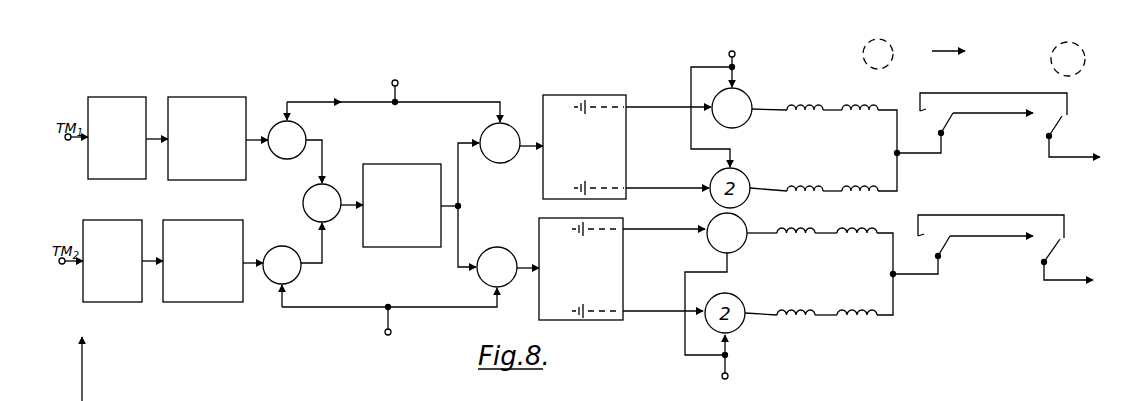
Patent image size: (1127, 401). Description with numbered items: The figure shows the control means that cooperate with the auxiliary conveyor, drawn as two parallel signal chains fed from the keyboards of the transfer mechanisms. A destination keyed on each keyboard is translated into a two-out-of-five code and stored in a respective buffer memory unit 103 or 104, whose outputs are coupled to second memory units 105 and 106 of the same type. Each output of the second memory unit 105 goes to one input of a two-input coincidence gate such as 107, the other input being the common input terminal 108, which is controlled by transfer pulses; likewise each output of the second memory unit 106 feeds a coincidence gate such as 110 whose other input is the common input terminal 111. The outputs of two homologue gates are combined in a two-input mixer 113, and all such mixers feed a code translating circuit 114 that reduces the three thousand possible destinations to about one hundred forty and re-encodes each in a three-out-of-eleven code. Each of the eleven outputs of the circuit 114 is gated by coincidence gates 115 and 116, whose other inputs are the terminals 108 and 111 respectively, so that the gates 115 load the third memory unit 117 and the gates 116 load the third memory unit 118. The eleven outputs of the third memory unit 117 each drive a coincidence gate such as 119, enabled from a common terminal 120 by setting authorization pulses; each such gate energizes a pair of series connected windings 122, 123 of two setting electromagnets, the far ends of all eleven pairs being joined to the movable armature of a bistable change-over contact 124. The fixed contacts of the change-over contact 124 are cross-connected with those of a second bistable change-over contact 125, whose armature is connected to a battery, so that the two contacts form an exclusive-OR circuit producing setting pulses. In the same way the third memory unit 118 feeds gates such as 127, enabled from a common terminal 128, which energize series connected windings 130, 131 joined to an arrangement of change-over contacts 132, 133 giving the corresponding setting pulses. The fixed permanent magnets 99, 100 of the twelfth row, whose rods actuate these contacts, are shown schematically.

The fixed permanent magnet 99 is at (1076, 68).
The fixed permanent magnet 100 is at (862, 54).
The buffer memory unit 103 is at (117, 138).
The buffer memory unit 104 is at (112, 261).
The second memory unit 105 is at (207, 138).
The second memory unit 106 is at (203, 261).
The two-input coincidence gate 107 is at (302, 135).
The input terminal 108 is at (414, 91).
The two-input coincidence gate 110 is at (296, 268).
The input terminal 111 is at (407, 325).
The two-input mixer 113 is at (308, 203).
The code translating circuit 114 is at (402, 205).
The two-input coincidence gate 115 is at (500, 155).
The two-input coincidence gate 116 is at (500, 256).
The third memory unit 117 is at (584, 147).
The third memory unit 118 is at (581, 269).
The two-input coincidence gate 119 is at (743, 115).
The common terminal 120 is at (751, 58).
The winding of setting electromagnet 122 is at (805, 122).
The winding of setting electromagnet 123 is at (861, 122).
The bistable change-over contact 124 is at (982, 126).
The bistable change-over contact 125 is at (1064, 147).
The two-input coincidence gate 127 is at (738, 241).
The common terminal 128 is at (746, 370).
The winding of setting electromagnet 130 is at (797, 245).
The winding of setting electromagnet 131 is at (857, 245).
The change-over contact 132 is at (978, 248).
The change-over contact 133 is at (1059, 271).